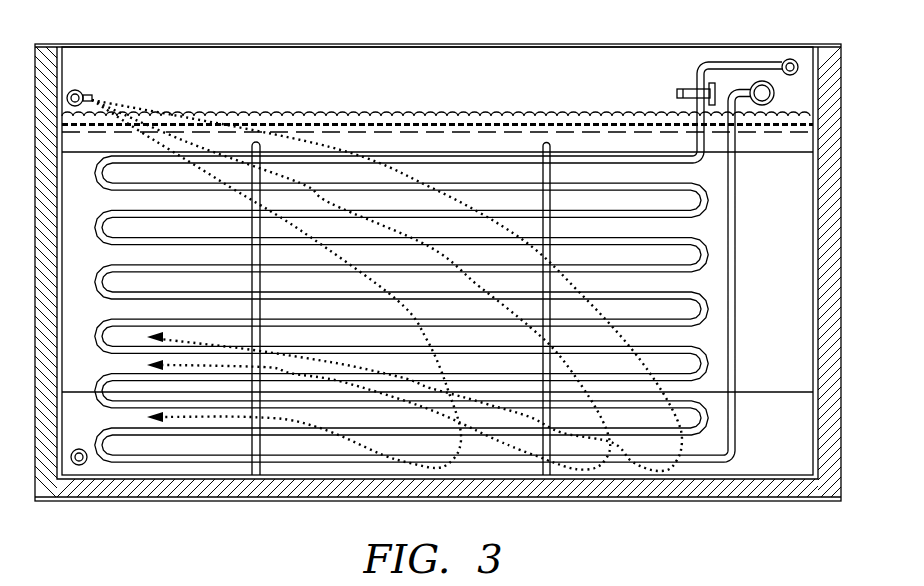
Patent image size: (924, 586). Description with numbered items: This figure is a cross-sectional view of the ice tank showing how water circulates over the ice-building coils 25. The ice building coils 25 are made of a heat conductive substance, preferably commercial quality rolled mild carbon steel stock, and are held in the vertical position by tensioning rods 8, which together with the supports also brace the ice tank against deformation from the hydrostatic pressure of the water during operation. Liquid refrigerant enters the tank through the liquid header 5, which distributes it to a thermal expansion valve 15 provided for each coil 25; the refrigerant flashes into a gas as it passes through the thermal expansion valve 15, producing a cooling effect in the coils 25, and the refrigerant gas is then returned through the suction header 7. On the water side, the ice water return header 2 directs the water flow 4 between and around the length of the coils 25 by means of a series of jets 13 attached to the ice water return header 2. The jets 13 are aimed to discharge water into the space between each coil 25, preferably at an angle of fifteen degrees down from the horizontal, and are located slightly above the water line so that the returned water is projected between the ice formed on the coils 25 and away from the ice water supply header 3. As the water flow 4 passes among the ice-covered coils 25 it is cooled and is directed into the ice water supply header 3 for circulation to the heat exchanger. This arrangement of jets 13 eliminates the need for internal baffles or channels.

The ice water return header 2 is at (75, 90).
The ice water supply header 3 is at (80, 447).
The water flow 4 is at (682, 443).
The liquid header 5 is at (792, 58).
The suction header 7 is at (775, 92).
The tensioning rods 8 is at (770, 153).
The jets 13 is at (88, 94).
The thermal expansion valve 15 is at (693, 85).
The ice building coils 25 is at (710, 257).